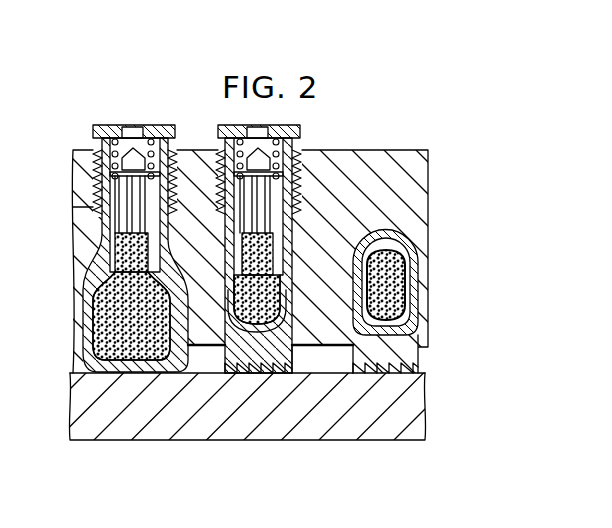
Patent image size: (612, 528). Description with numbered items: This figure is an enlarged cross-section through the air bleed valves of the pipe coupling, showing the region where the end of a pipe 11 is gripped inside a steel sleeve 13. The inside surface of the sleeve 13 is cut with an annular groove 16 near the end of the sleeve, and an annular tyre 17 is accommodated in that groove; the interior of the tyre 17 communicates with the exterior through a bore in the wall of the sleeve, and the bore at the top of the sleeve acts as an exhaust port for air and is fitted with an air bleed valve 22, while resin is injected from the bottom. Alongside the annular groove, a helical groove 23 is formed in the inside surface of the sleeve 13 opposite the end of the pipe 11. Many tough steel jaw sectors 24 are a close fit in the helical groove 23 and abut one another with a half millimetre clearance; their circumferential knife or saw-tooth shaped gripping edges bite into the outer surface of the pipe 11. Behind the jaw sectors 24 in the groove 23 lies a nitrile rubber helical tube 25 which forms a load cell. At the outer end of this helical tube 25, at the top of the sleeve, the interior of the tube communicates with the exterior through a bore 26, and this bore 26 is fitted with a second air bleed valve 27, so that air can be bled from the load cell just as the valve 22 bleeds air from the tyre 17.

The pipe 11 is at (377, 430).
The sleeve 13 is at (383, 162).
The annular groove 16 is at (167, 270).
The annular tyre 17 is at (193, 373).
The air bleed valve 22 is at (138, 197).
The helical groove 23 is at (428, 247).
The jaw sector 24 is at (348, 360).
The helical tube 25 is at (426, 220).
The bore 26 is at (278, 210).
The air bleed valve 27 is at (263, 197).